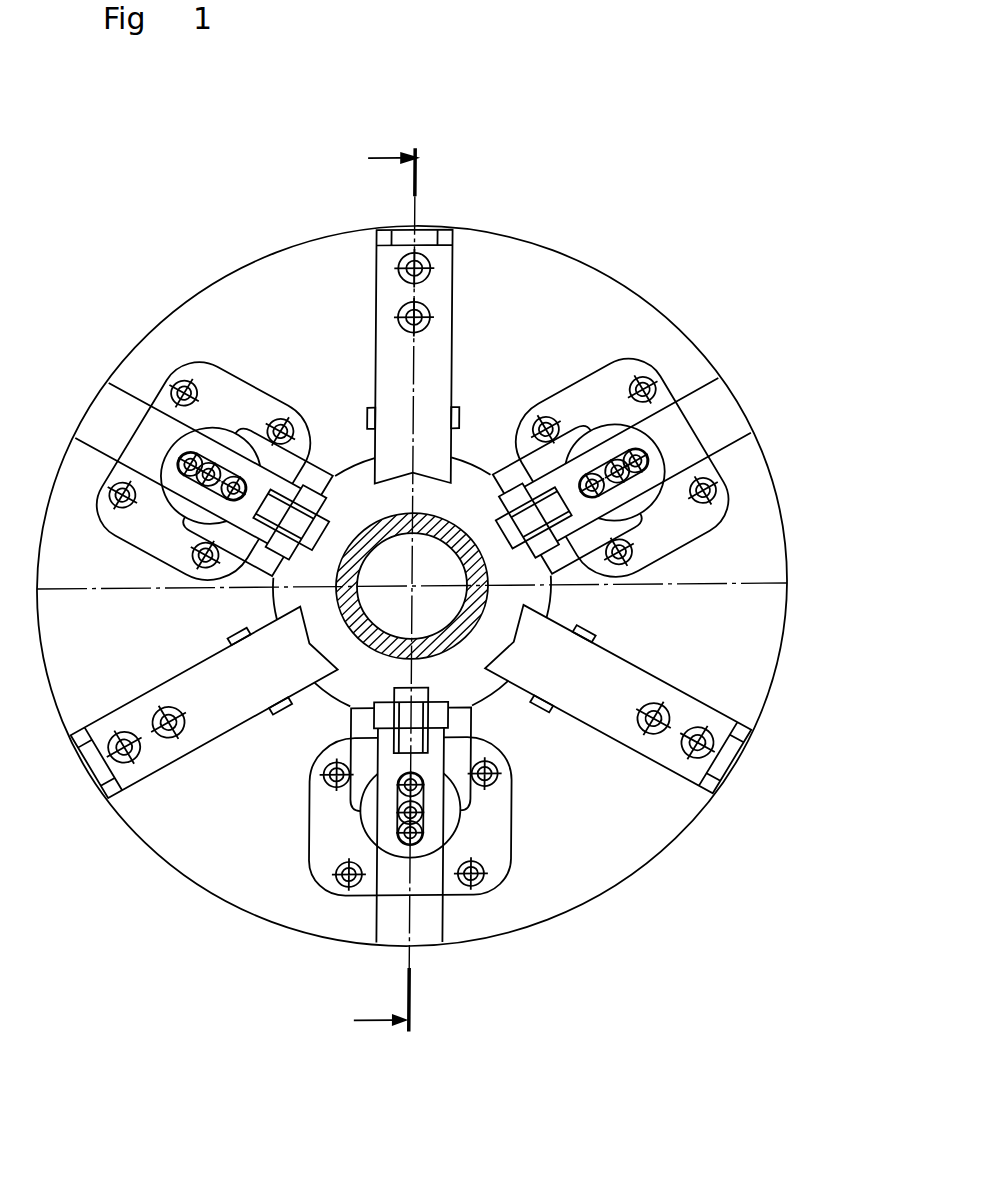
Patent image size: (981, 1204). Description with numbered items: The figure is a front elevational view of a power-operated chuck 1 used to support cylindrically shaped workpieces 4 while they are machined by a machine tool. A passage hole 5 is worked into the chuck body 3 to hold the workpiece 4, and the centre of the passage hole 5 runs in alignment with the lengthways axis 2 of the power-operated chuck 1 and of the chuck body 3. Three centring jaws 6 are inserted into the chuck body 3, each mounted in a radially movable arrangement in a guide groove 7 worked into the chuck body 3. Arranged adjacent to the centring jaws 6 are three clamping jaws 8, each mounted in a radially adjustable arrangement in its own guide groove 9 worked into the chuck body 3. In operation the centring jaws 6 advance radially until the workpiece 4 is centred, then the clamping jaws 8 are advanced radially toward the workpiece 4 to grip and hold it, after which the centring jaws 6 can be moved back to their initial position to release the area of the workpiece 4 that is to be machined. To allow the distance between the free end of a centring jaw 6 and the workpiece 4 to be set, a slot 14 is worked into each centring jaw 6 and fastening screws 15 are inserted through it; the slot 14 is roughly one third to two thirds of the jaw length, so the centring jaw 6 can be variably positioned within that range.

The power-operated chuck 1 is at (432, 539).
The lengthways axis 2 is at (411, 588).
The chuck body 3 is at (636, 293).
The workpiece 4 is at (456, 632).
The passage hole 5 is at (361, 491).
The centring jaw 6 is at (200, 365).
The guide groove 7 is at (455, 640).
The clamping jaw 8 is at (473, 303).
The guide groove 9 is at (240, 718).
The slot 14 is at (408, 835).
The fastening screw 15 is at (421, 815).